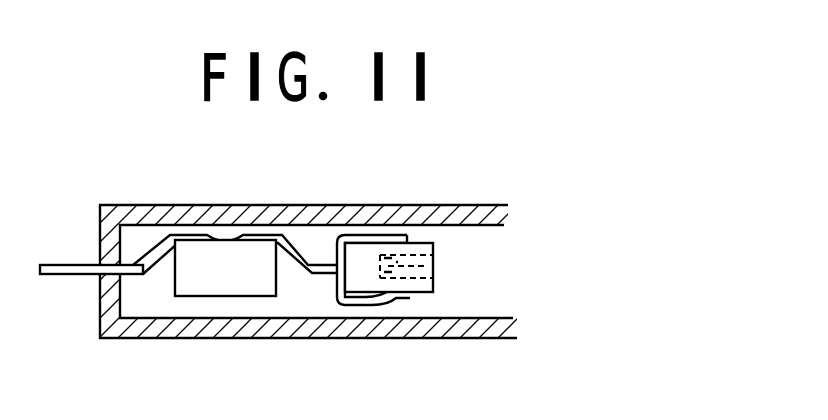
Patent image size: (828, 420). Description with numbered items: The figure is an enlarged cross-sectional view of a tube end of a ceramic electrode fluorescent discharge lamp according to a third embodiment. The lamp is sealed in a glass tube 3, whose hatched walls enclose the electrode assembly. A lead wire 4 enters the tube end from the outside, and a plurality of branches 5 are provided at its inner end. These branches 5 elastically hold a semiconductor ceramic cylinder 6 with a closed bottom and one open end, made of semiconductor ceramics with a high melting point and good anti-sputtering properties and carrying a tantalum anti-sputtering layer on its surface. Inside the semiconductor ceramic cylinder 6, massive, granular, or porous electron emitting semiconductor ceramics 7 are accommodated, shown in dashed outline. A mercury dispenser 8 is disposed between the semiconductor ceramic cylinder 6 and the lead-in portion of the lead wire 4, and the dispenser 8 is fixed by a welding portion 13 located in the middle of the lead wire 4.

The glass tube 3 is at (365, 212).
The lead wire 4 is at (62, 278).
The branches 5 is at (398, 235).
The semiconductor ceramic cylinder with closed bottom 6 is at (418, 285).
The electron emitting semiconductor ceramics 7 is at (410, 263).
The mercury dispenser 8 is at (217, 276).
The welding portion 13 is at (232, 233).